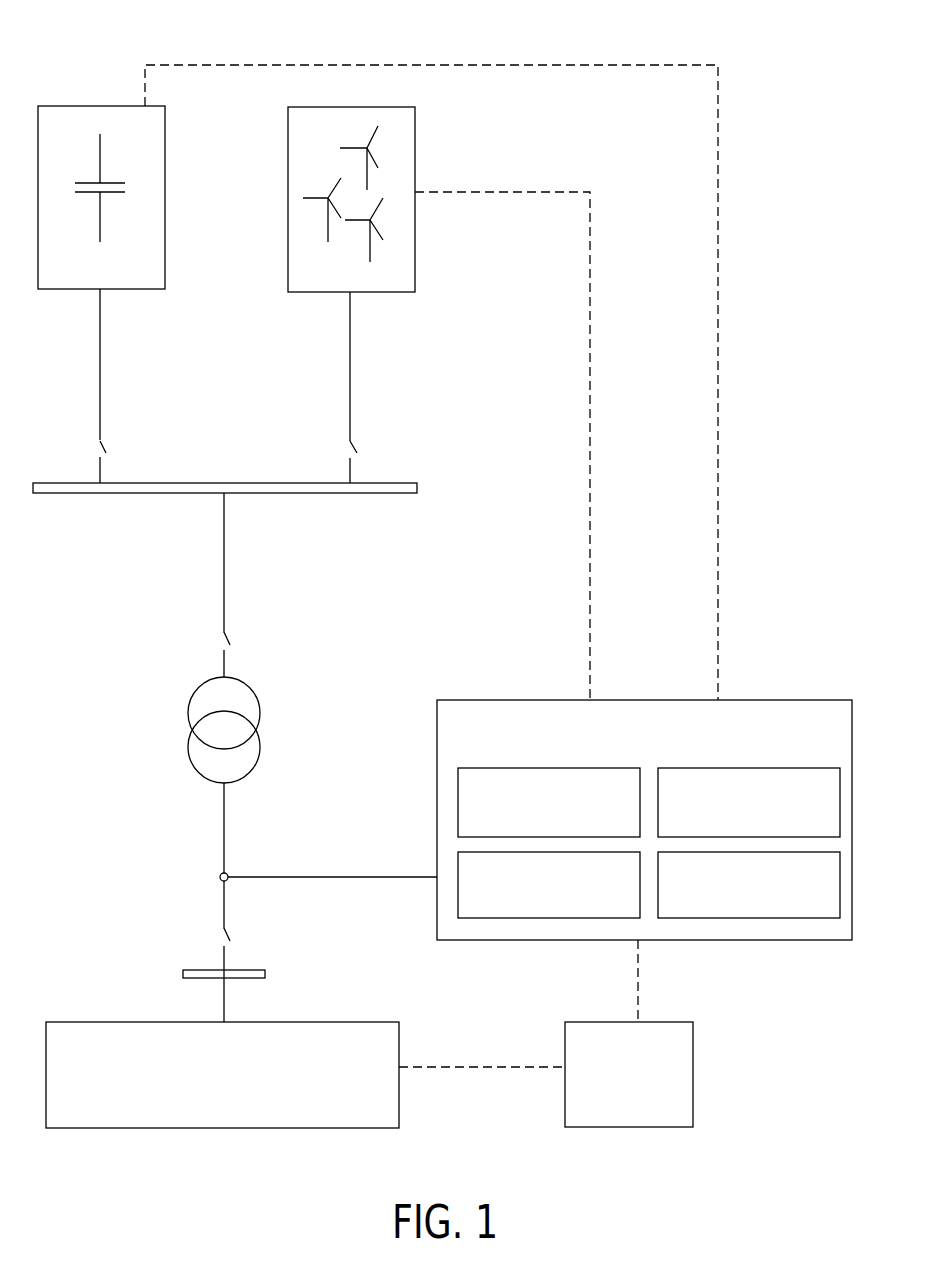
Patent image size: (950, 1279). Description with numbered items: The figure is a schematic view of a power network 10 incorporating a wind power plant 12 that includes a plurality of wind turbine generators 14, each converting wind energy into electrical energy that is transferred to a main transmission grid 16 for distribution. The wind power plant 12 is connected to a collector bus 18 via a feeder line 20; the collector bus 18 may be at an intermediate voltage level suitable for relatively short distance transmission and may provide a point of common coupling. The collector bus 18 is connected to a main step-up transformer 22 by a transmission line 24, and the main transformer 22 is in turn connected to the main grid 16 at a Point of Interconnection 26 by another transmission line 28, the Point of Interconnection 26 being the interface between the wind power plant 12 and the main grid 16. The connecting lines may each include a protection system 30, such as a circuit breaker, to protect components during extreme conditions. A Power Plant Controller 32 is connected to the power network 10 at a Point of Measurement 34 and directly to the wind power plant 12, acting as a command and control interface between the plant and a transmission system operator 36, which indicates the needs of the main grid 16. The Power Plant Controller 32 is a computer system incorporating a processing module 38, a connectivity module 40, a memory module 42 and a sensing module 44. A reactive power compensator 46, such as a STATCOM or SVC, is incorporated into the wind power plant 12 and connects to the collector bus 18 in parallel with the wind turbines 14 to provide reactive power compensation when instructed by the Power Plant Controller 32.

The power network 10 is at (755, 212).
The wind power plant 12 is at (240, 92).
The wind turbine generators 14 is at (415, 153).
The main transmission grid 16 is at (80, 1021).
The collector bus 18 is at (417, 491).
The feeder line 20 is at (352, 360).
The main step-up transformer 22 is at (250, 686).
The transmission line 24 is at (226, 594).
The Point of Interconnection 26 is at (265, 974).
The transmission line 28 is at (226, 832).
The protection system 30 is at (352, 454).
The Power Plant Controller 32 is at (780, 700).
The Point of Measurement 34 is at (219, 875).
The transmission system operator 36 is at (693, 1073).
The processing module 38 is at (517, 768).
The connectivity module 40 is at (770, 768).
The memory module 42 is at (515, 918).
The sensing module 44 is at (762, 918).
The reactive power compensator 46 is at (165, 243).